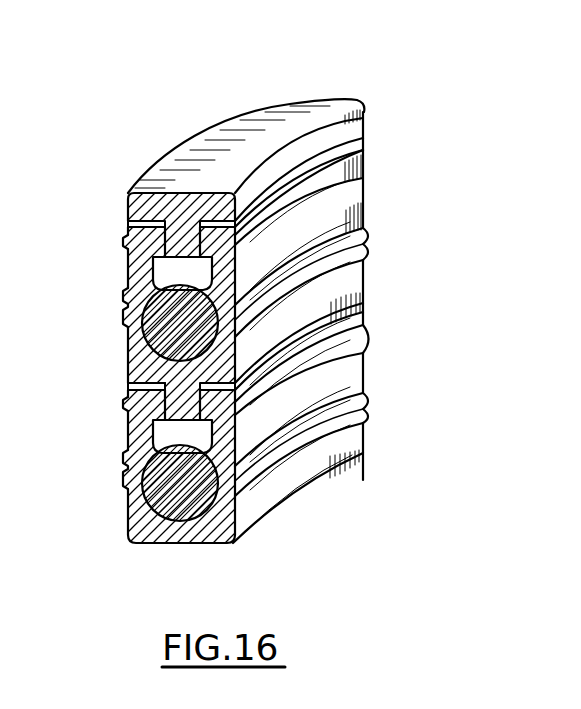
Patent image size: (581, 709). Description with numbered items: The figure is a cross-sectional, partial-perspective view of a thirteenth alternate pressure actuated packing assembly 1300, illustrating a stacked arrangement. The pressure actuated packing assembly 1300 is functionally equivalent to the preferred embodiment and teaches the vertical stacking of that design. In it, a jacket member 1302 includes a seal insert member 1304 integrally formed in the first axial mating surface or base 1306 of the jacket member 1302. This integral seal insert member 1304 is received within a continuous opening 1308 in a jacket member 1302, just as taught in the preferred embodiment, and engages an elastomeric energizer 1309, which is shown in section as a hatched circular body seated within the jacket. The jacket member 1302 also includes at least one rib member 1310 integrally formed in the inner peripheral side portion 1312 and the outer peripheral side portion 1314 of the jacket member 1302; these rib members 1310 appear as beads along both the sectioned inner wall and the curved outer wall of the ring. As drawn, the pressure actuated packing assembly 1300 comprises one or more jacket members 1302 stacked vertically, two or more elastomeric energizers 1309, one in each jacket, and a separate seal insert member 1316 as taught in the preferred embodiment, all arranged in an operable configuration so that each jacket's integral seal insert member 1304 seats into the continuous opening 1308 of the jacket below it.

The pressure actuated packing assembly 1300 is at (232, 98).
The jacket member 1302 is at (127, 352).
The seal insert member 1304 is at (128, 387).
The first axial mating surface or base 1306 is at (363, 293).
The continuous opening 1308 is at (128, 417).
The elastomeric energizer 1309 is at (190, 288).
The rib member 1310 is at (117, 250).
The inner peripheral side portion 1312 is at (127, 283).
The outer peripheral side portion 1314 is at (362, 213).
The seal insert member 1316 is at (222, 160).